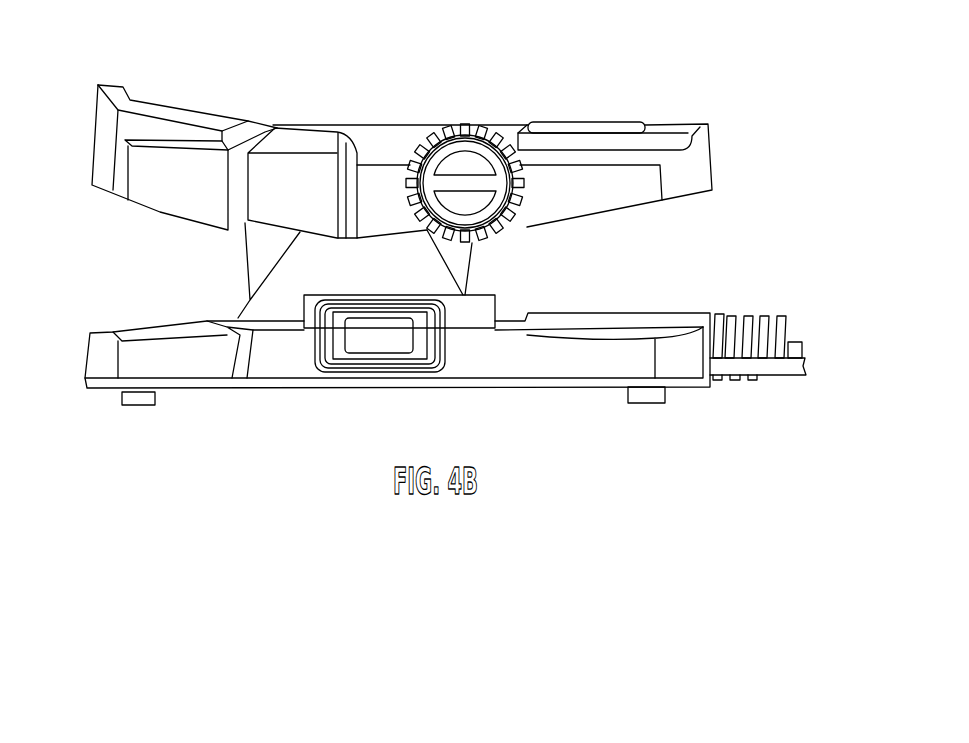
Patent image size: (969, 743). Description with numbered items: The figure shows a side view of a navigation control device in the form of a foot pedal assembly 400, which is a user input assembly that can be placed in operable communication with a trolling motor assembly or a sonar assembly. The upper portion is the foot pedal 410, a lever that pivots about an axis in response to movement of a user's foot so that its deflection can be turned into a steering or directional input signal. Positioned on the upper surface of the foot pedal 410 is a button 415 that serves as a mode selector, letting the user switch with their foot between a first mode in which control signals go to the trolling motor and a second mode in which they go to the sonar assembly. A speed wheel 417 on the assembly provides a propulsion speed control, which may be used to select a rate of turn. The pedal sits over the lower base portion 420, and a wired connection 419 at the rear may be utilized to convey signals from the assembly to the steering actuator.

The foot pedal assembly 400 is at (320, 97).
The foot pedal 410 is at (412, 127).
The button 415 is at (610, 108).
The speed wheel 417 is at (508, 242).
The wired connection 419 is at (798, 327).
The base 420 is at (590, 403).